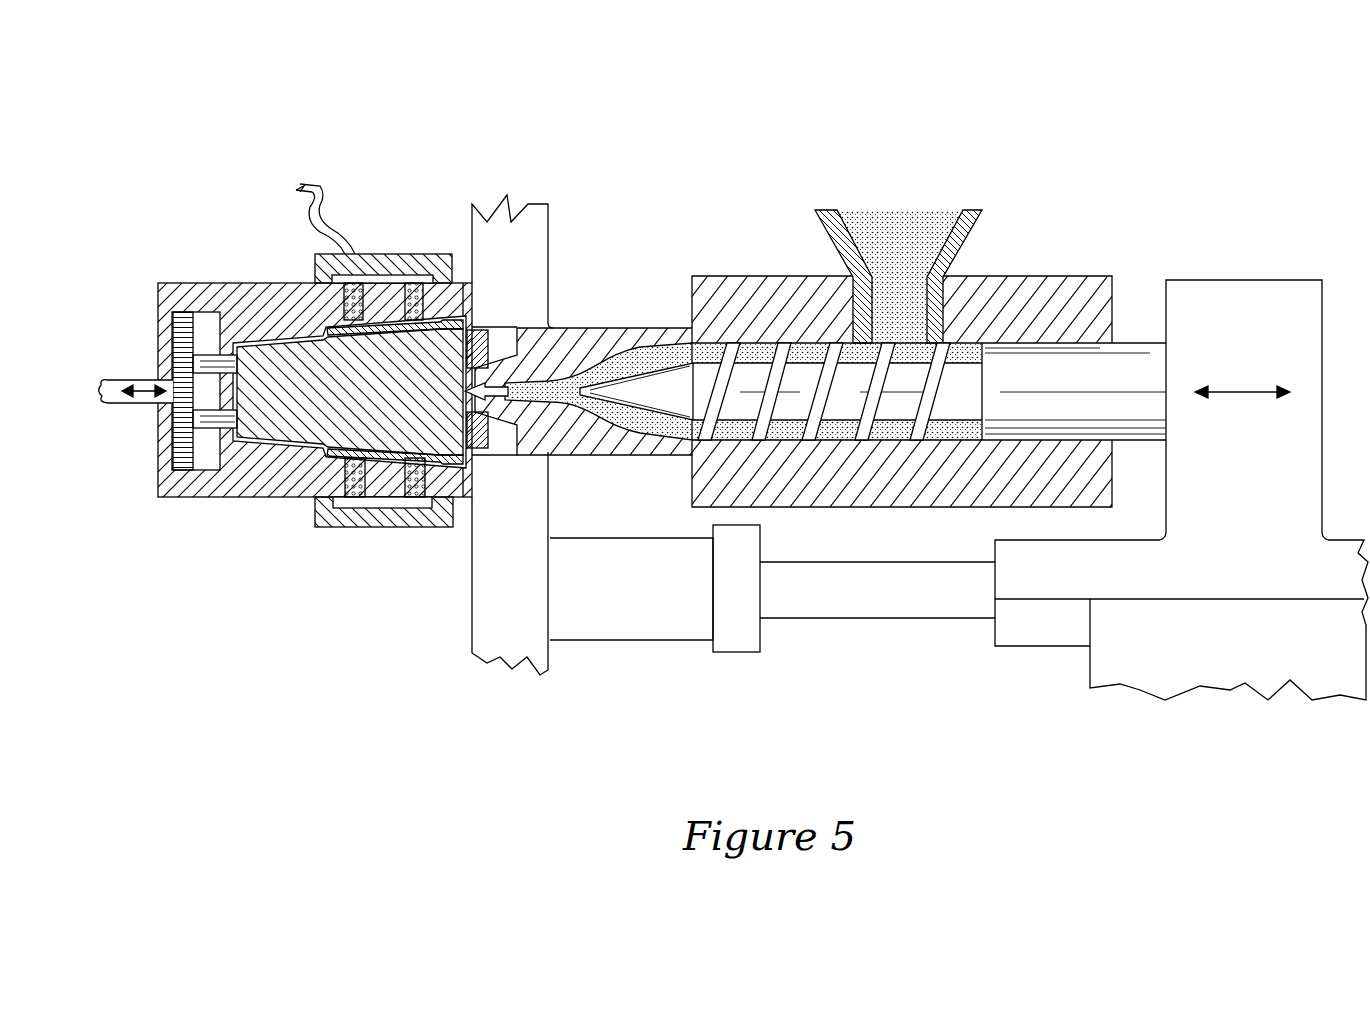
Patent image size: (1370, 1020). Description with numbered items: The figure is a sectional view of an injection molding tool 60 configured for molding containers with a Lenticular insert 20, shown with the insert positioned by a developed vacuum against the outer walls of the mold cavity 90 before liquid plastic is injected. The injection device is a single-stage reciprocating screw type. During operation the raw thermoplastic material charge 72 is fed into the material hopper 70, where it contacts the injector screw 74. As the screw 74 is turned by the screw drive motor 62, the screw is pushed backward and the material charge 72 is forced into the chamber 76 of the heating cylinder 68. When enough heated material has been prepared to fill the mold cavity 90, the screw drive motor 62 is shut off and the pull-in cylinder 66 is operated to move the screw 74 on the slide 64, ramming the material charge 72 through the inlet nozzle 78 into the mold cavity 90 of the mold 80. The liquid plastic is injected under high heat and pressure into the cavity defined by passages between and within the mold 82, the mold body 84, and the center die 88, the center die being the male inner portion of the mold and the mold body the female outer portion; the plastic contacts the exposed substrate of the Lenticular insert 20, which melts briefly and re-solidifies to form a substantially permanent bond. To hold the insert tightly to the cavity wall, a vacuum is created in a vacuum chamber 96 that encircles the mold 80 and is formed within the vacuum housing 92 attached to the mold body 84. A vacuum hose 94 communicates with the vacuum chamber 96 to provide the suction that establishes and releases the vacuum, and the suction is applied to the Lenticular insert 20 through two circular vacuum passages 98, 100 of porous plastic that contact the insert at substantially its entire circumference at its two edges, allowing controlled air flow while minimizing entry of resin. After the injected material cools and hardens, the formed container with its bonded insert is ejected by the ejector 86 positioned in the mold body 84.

The Lenticular insert 20 is at (337, 325).
The molding tool 60 is at (1148, 199).
The screw drive motor 62 is at (1262, 281).
The slide 64 is at (1040, 648).
The pull-in cylinder 66 is at (737, 652).
The heating cylinder 68 is at (727, 276).
The material hopper 70 is at (982, 212).
The material charge 72 is at (893, 238).
The injector screw 74 is at (812, 362).
The chamber 76 is at (688, 342).
The inlet nozzle 78 is at (570, 350).
The mold 80 is at (197, 517).
The mold 82 is at (466, 500).
The mold body 84 is at (185, 318).
The ejector 86 is at (140, 403).
The center die 88 is at (258, 440).
The mold cavity 90 is at (424, 283).
The vacuum housing 92 is at (375, 527).
The vacuum hose 94 is at (330, 228).
The vacuum chamber 96 is at (377, 278).
The vacuum passage 98 is at (415, 497).
The vacuum passage 100 is at (350, 497).